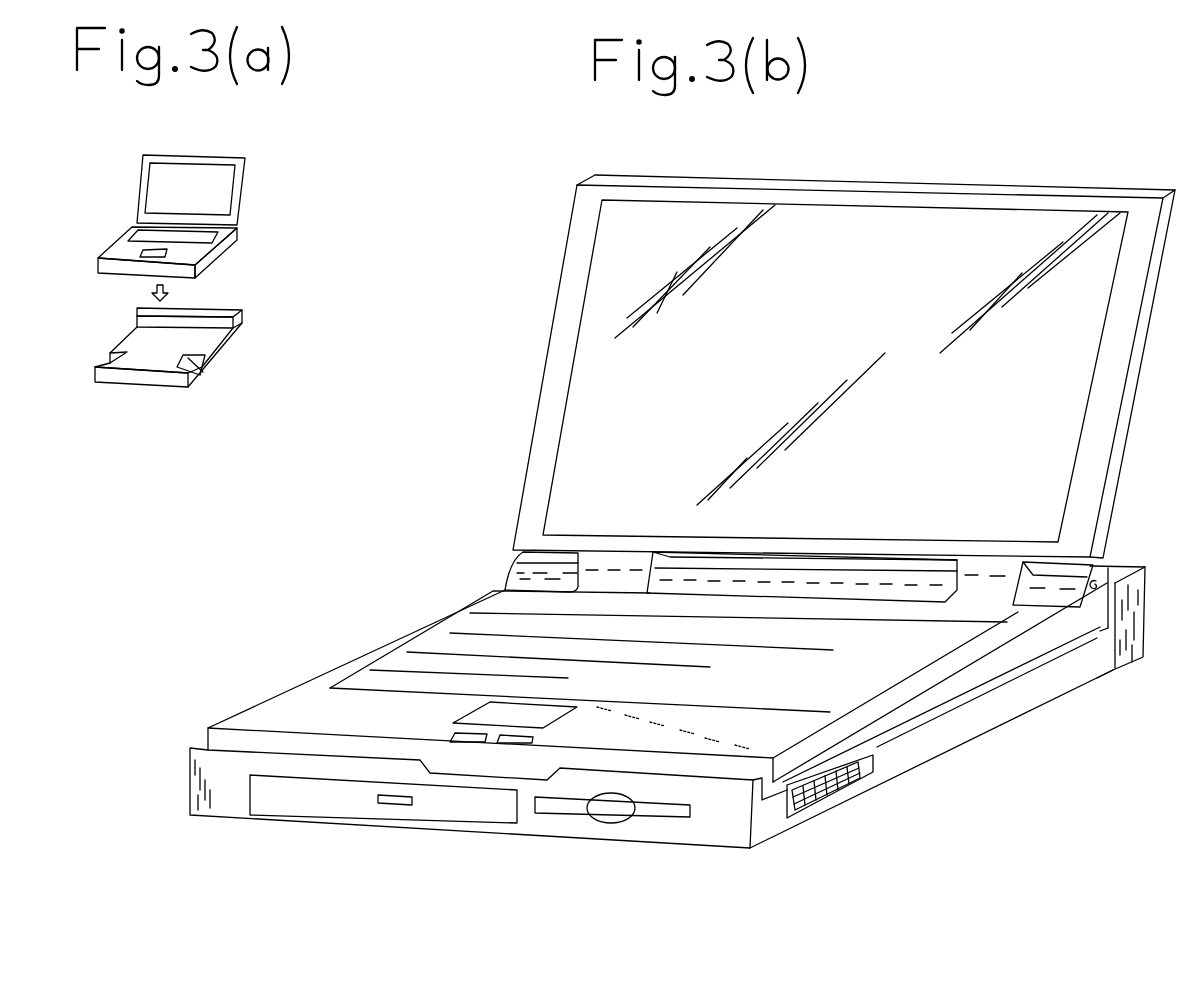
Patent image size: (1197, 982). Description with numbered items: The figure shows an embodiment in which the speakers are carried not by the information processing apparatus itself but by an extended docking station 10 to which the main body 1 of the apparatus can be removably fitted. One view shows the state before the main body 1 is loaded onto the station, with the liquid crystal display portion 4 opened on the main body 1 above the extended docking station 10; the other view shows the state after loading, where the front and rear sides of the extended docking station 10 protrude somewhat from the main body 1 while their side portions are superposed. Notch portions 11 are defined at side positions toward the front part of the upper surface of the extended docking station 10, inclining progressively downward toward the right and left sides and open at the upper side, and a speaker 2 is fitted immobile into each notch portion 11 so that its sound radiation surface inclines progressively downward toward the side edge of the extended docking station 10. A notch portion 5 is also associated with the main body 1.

In FIG. 3A, the main body 1 is at (120, 248).
In FIG. 3B, the main body 1 is at (305, 703).
In FIG. 3A, the speaker 2 is at (203, 368).
In FIG. 3B, the speaker 2 is at (830, 785).
In FIG. 3A, the liquid crystal display portion 4 is at (225, 190).
In FIG. 3B, the liquid crystal display portion 4 is at (1080, 353).
In FIG. 3B, the notch portion 5 is at (1108, 578).
In FIG. 3A, the extended docking station 10 is at (203, 340).
In FIG. 3B, the extended docking station 10 is at (983, 712).
In FIG. 3B, the notch portion 11 is at (865, 757).